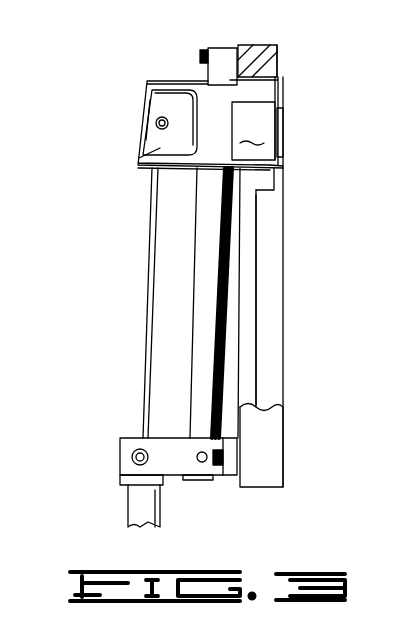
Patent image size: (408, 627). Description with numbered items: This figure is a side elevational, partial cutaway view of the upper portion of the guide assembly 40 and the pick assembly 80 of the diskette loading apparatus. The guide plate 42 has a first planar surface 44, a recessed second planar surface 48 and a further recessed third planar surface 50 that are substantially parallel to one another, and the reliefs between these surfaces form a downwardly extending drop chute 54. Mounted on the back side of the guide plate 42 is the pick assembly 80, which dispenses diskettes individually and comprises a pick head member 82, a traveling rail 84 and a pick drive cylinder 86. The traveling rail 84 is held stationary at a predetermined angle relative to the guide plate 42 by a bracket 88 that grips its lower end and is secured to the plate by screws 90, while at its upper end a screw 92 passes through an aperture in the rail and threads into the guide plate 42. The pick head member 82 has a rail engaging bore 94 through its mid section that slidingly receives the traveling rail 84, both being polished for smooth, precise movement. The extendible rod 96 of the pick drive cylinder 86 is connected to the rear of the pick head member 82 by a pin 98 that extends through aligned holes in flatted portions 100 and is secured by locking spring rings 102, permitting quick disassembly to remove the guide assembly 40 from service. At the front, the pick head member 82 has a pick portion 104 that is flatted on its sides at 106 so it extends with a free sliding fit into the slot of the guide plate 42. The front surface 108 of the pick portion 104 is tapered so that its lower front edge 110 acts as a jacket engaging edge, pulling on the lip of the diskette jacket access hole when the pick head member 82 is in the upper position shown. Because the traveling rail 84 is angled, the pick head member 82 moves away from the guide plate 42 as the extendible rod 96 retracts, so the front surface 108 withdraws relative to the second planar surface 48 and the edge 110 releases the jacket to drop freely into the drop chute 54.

The guide assembly 40 is at (198, 45).
The guide plate 42 is at (265, 45).
The first planar surface 44 is at (284, 434).
The second planar surface 48 is at (279, 62).
The third planar surface 50 is at (256, 300).
The drop chute 54 is at (268, 243).
The pick assembly 80 is at (138, 82).
The pick head member 82 is at (137, 125).
The traveling rail 84 is at (193, 270).
The pick drive cylinder 86 is at (128, 498).
The bracket 88 is at (180, 470).
The screws 90 is at (219, 468).
The screw 92 is at (200, 56).
The rail engaging bore 94 is at (216, 171).
The extendible rod 96 is at (148, 336).
The pin 98 is at (156, 125).
The flatted portions 100 is at (140, 160).
The locking spring rings 102 is at (143, 103).
The pick portion 104 is at (265, 94).
The flatted sides 106 is at (253, 131).
The front surface 108 is at (284, 134).
The lower front edge 110 is at (285, 166).